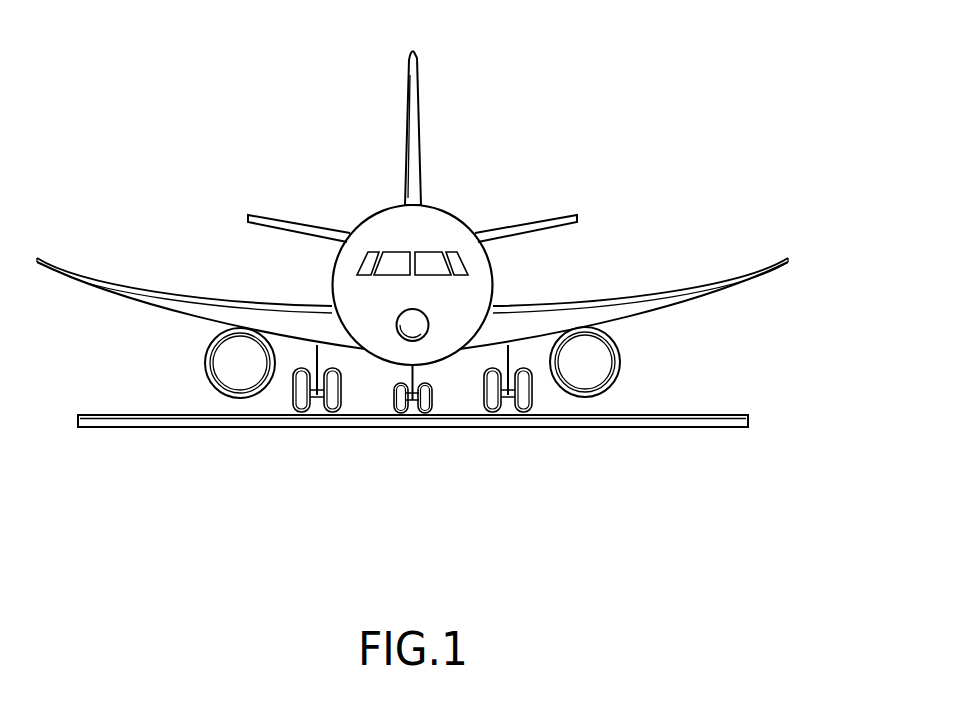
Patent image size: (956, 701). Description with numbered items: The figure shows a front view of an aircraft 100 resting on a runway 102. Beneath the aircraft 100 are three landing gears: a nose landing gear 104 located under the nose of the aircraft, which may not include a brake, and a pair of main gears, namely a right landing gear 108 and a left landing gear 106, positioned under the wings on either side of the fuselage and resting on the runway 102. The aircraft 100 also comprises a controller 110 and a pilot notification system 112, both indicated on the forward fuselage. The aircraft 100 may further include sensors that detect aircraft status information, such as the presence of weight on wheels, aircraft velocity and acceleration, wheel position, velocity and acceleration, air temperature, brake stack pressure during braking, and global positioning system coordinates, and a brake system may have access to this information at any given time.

The aircraft 100 is at (283, 138).
The runway 102 is at (735, 412).
The nose landing gear 104 is at (430, 402).
The left landing gear 106 is at (535, 402).
The right landing gear 108 is at (292, 404).
The controller 110 is at (493, 300).
The pilot notification system 112 is at (361, 259).